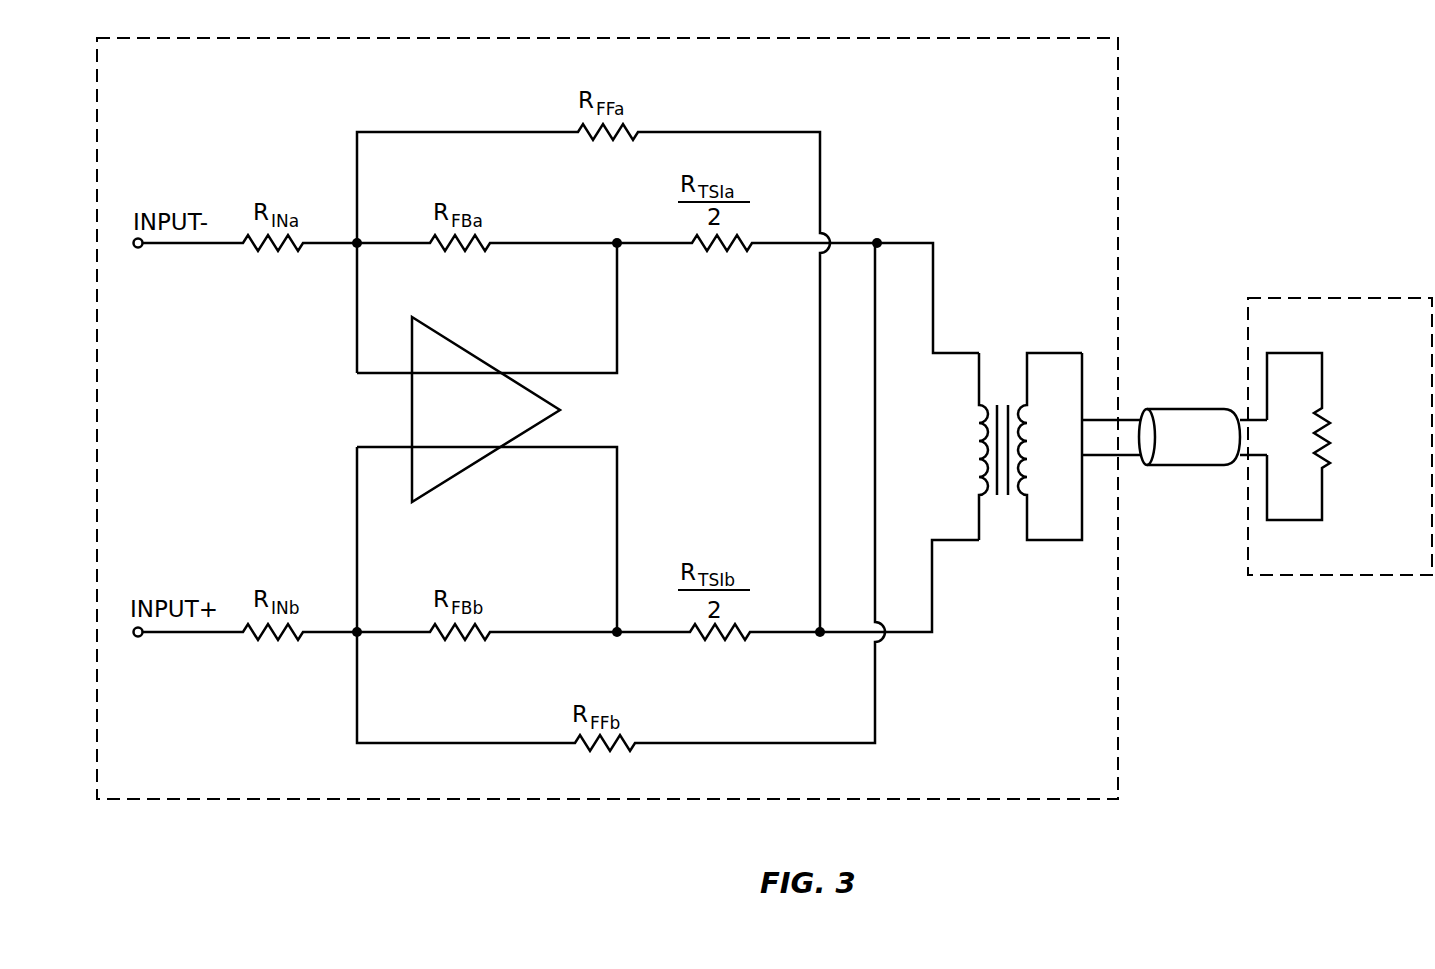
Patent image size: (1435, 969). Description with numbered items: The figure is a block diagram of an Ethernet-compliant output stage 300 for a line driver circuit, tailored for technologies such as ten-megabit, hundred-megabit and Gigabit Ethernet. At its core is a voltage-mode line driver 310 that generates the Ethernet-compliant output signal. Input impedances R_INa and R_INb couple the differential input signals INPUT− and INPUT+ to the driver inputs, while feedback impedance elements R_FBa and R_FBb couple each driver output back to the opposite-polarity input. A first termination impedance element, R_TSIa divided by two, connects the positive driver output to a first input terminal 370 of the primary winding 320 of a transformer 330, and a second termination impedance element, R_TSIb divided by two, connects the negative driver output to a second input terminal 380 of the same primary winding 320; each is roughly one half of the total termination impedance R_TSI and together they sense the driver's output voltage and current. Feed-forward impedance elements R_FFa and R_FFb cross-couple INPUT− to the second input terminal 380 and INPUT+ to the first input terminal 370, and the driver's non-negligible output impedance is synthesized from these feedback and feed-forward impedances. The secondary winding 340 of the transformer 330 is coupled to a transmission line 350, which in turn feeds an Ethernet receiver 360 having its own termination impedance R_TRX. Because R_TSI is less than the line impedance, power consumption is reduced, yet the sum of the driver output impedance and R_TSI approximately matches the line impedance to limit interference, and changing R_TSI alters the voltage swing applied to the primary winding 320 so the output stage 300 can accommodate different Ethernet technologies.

The output stage 300 is at (155, 785).
The voltage-mode line driver 310 is at (453, 342).
The primary winding 320 is at (988, 540).
The transformer 330 is at (1031, 459).
The secondary winding 340 is at (1020, 550).
The transmission line 350 is at (1192, 468).
The Ethernet receiver 360 is at (1307, 562).
The first input terminal 370 is at (885, 205).
The second input terminal 380 is at (818, 668).